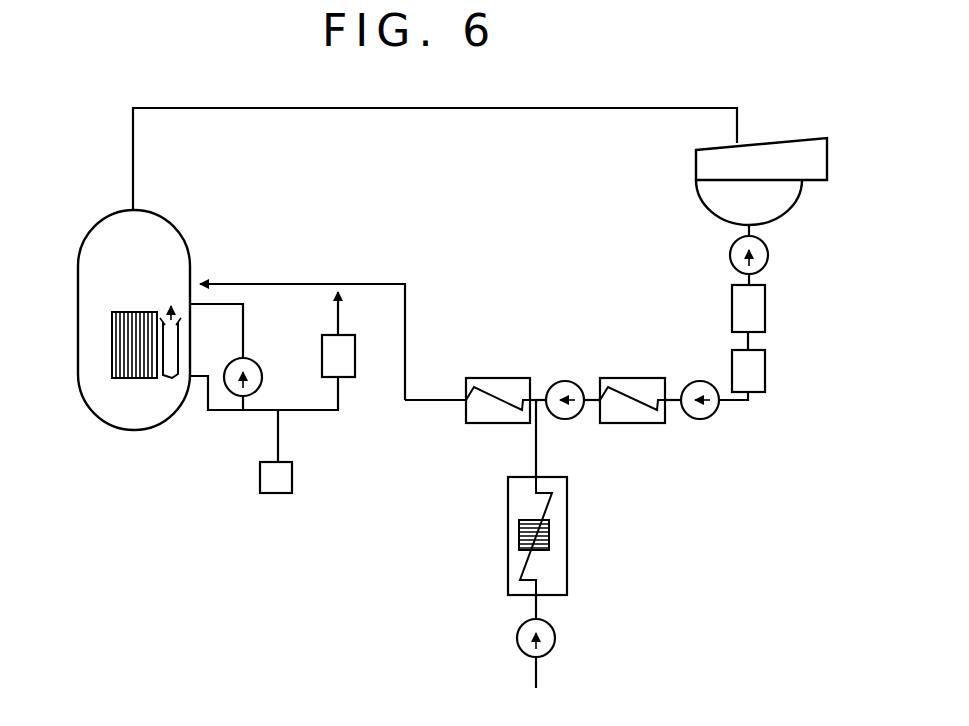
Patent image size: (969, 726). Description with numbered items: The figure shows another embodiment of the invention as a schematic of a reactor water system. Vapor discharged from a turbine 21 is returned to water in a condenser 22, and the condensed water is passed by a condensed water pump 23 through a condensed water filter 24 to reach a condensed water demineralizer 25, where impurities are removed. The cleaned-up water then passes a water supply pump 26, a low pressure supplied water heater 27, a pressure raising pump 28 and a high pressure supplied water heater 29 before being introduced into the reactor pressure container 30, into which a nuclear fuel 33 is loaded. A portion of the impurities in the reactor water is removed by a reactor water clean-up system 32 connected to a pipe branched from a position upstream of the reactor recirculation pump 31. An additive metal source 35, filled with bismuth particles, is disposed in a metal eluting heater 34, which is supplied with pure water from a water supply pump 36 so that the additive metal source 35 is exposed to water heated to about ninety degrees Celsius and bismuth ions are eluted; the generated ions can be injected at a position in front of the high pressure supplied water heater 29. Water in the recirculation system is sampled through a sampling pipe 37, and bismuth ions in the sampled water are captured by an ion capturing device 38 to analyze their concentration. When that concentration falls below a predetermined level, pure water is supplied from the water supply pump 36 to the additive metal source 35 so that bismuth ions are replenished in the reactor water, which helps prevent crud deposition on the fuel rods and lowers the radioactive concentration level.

The turbine 21 is at (700, 160).
The condenser 22 is at (712, 200).
The condensed water pump 23 is at (730, 250).
The condensed water filter 24 is at (766, 305).
The condensed water demineralizer 25 is at (766, 372).
The water supply pump 26 is at (700, 381).
The low pressure supplied water heater 27 is at (626, 378).
The pressure raising pump 28 is at (560, 380).
The high pressure supplied water heater 29 is at (492, 378).
The reactor pressure container 30 is at (180, 225).
The reactor recirculation pump 31 is at (255, 363).
The reactor water clean-up system 32 is at (356, 352).
The nuclear fuel 33 is at (112, 332).
The metal eluting heater 34 is at (568, 488).
The additive metal source 35 is at (549, 538).
The water supply pump 36 is at (556, 638).
The sampling pipe 37 is at (280, 432).
The ion capturing device 38 is at (293, 478).